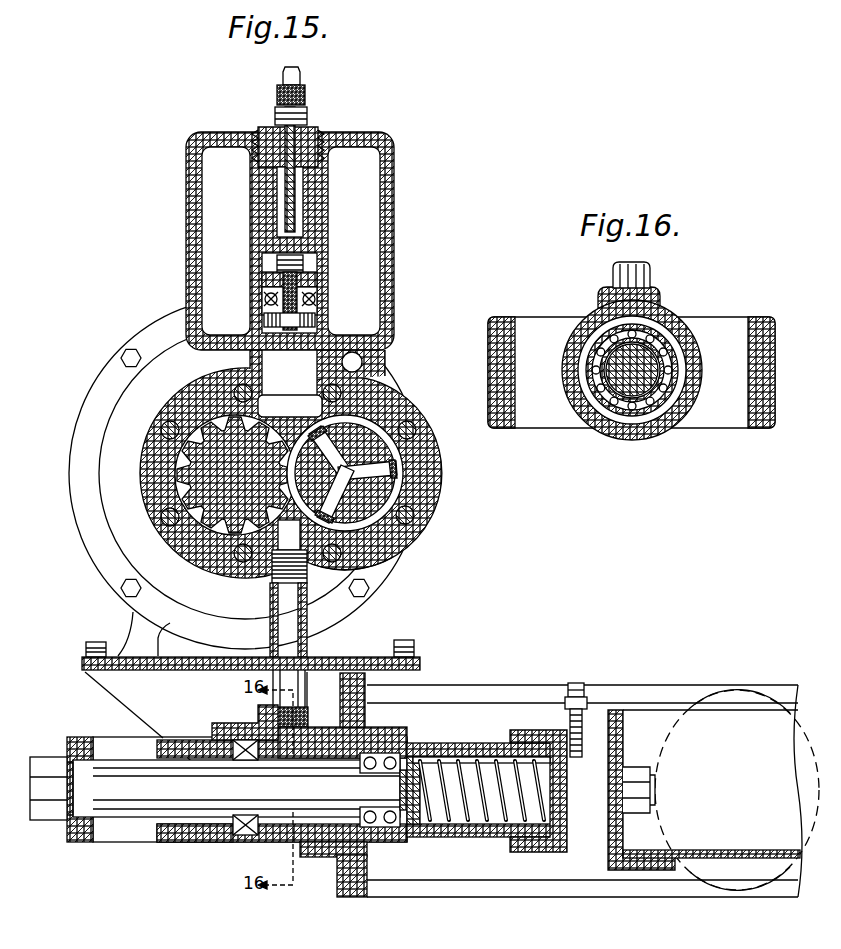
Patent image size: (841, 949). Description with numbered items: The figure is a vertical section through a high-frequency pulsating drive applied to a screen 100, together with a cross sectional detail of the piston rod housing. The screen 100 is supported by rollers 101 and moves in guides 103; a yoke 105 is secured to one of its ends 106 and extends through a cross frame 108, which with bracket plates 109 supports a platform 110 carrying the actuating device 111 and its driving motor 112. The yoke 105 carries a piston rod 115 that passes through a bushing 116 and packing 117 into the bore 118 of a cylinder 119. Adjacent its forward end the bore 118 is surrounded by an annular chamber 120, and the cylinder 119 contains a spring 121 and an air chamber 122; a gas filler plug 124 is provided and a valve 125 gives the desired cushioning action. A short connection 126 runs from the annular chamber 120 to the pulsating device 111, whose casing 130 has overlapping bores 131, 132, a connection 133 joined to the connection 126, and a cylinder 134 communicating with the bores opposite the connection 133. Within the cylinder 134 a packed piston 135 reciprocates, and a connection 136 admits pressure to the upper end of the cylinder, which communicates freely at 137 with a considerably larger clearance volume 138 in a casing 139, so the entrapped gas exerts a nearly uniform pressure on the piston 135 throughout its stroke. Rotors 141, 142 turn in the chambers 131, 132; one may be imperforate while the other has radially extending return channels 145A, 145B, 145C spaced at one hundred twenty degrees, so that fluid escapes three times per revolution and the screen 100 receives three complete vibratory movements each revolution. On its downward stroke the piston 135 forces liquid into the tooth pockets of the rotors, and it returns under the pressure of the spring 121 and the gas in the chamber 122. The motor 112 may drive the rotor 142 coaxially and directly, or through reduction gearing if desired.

In FIG. 15, the screen 100 is at (705, 851).
In FIG. 15, the rollers 101 is at (729, 685).
In FIG. 15, the guides 103 is at (690, 702).
In FIG. 15, the yoke 105 is at (133, 848).
In FIG. 16, the yoke 105 is at (758, 320).
In FIG. 15, the end of screen 106 is at (618, 712).
In FIG. 15, the cross frame 108 is at (356, 898).
In FIG. 15, the bracket plates 109 is at (120, 704).
In FIG. 15, the platform 110 is at (420, 664).
In FIG. 15, the actuating device 111 is at (428, 507).
In FIG. 15, the driving motor 112 is at (92, 392).
In FIG. 15, the piston rod 115 is at (120, 805).
In FIG. 16, the piston rod 115 is at (618, 345).
In FIG. 15, the bushing 116 is at (193, 840).
In FIG. 15, the packing 117 is at (240, 735).
In FIG. 15, the bore 118 is at (452, 826).
In FIG. 15, the cylinder 119 is at (440, 744).
In FIG. 15, the annular chamber 120 is at (362, 832).
In FIG. 15, the spring 121 is at (478, 758).
In FIG. 15, the air chamber 122 is at (492, 826).
In FIG. 15, the filler plug 124 is at (575, 683).
In FIG. 15, the valve 125 is at (245, 836).
In FIG. 16, the valve 125 is at (674, 340).
In FIG. 15, the short connection 126 is at (307, 633).
In FIG. 16, the short connection 126 is at (645, 280).
In FIG. 15, the casing 130 is at (312, 402).
In FIG. 15, the bore 131 is at (393, 454).
In FIG. 15, the bore 132 is at (185, 462).
In FIG. 15, the connection 133 is at (372, 560).
In FIG. 15, the cylinder 134 is at (312, 325).
In FIG. 15, the piston 135 is at (303, 268).
In FIG. 15, the connection 136 is at (306, 102).
In FIG. 15, the communication passage 137 is at (305, 192).
In FIG. 15, the clearance volume 138 is at (362, 197).
In FIG. 15, the casing 139 is at (186, 220).
In FIG. 15, the rotor 141 is at (376, 452).
In FIG. 15, the rotor 142 is at (180, 497).
In FIG. 15, the return channel 145A is at (398, 478).
In FIG. 15, the return channel 145B is at (322, 432).
In FIG. 15, the return channel 145C is at (333, 520).